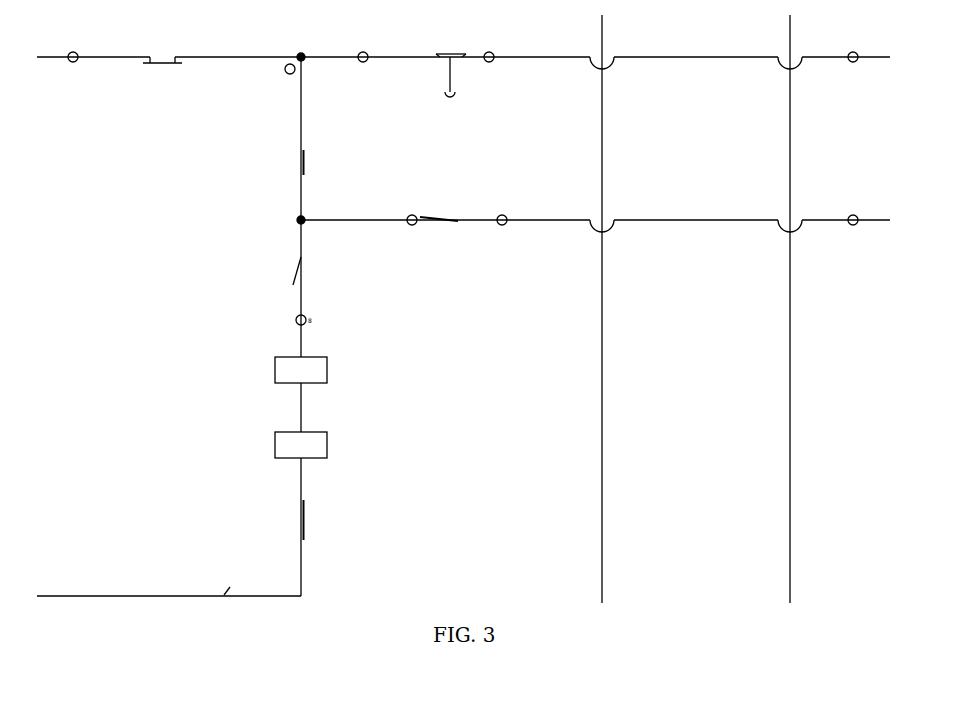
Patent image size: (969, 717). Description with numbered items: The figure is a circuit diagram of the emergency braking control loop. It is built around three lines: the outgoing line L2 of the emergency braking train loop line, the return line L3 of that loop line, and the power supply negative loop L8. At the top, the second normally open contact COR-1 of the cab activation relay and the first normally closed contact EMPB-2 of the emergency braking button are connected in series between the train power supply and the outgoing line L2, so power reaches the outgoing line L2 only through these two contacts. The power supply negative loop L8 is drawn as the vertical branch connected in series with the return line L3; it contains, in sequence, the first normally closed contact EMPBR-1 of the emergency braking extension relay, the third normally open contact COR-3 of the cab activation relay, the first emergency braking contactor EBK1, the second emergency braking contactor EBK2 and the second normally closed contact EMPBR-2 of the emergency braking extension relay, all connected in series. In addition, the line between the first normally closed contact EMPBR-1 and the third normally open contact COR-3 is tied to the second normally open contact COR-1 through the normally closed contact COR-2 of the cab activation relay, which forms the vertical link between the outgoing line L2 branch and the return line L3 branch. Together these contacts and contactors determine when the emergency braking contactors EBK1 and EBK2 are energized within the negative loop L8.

The outgoing line of the emergency braking train loop line L2 is at (463, 50).
The return line of the emergency braking train loop line L3 is at (593, 215).
The power supply negative loop L8 is at (317, 407).
The second normally open contact of the cab activation relay COR-1 is at (160, 46).
The normally closed contact of the cab activation relay COR-2 is at (274, 155).
The third normally open contact of the cab activation relay COR-3 is at (272, 268).
The first normally closed contact of the emergency braking button EMPB-2 is at (445, 65).
The first normally closed contact of the emergency braking extension relay EMPBR-1 is at (431, 207).
The second normally closed contact of the emergency braking extension relay EMPBR-2 is at (266, 519).
The first emergency braking contactor EBK1 is at (277, 369).
The second emergency braking contactor EBK2 is at (277, 444).